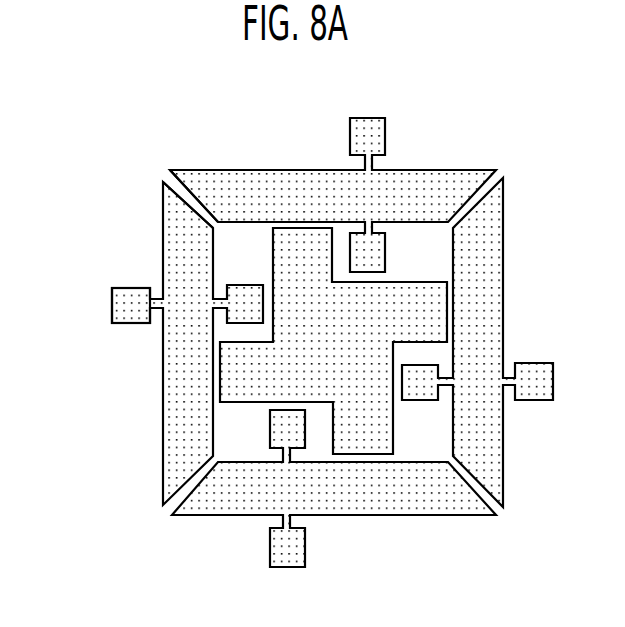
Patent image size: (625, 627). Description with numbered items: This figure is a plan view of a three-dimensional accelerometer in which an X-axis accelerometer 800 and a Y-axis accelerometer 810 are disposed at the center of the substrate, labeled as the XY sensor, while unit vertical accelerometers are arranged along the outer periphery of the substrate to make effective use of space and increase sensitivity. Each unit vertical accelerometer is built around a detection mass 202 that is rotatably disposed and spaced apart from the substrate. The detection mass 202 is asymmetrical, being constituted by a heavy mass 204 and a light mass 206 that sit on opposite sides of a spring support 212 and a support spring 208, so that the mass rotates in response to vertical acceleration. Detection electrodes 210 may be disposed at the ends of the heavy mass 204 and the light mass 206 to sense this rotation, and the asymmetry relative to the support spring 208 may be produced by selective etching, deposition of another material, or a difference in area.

The detection mass 202 is at (322, 171).
The heavy mass 204 is at (169, 432).
The light mass 206 is at (173, 240).
The support spring 208 is at (150, 286).
The detection electrode 210 is at (163, 169).
The spring support 212 is at (111, 307).
The X-axis accelerometer 800 is at (317, 277).
The Y-axis accelerometer 810 is at (287, 232).